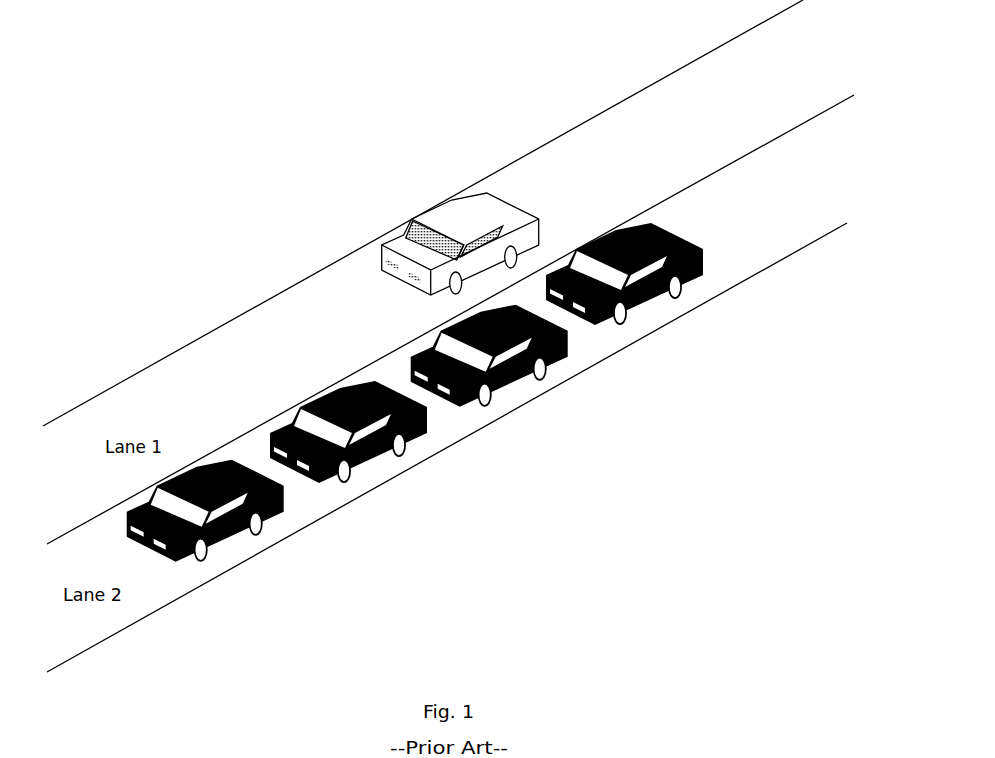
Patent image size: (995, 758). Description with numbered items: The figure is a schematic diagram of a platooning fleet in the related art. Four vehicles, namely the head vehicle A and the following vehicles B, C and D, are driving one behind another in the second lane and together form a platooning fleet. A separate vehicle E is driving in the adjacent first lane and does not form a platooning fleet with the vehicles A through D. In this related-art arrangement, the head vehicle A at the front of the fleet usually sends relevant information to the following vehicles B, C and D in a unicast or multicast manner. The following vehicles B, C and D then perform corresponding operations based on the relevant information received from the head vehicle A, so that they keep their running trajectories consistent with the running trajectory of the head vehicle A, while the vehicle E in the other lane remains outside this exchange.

The head vehicle A is at (660, 289).
The following vehicle B is at (545, 362).
The following vehicle C is at (386, 441).
The following vehicle D is at (242, 522).
The vehicle E is at (455, 225).